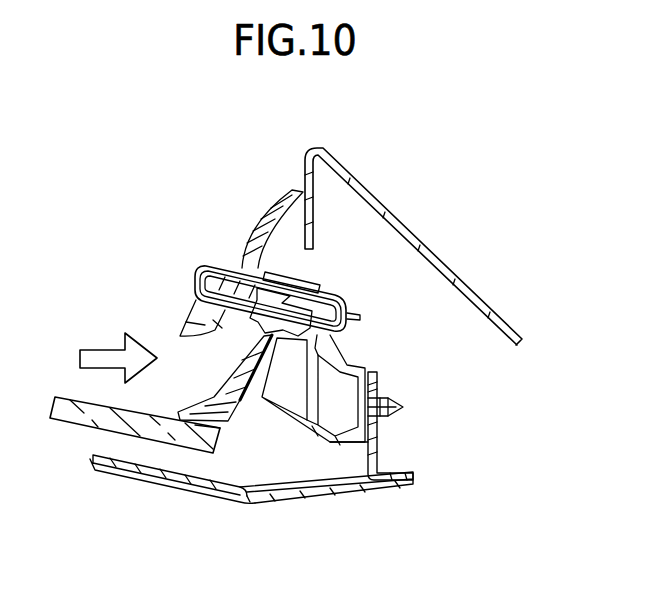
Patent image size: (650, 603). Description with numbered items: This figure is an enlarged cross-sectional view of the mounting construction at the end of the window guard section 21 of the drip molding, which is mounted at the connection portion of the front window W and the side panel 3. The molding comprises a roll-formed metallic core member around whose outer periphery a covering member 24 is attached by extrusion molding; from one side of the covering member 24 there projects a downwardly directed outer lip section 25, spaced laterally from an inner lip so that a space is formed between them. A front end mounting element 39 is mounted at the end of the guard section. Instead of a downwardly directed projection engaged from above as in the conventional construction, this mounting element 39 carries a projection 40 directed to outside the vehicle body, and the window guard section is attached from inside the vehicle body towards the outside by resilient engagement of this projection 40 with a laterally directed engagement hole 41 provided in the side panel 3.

The side panel 3 is at (400, 208).
The window guard section 21 is at (213, 258).
The outer lip section 25 is at (192, 284).
The covering member 24 is at (300, 278).
The projection 40 is at (390, 397).
The engagement hole 41 is at (383, 418).
The front end mounting element 39 is at (268, 425).
The front window W is at (72, 392).